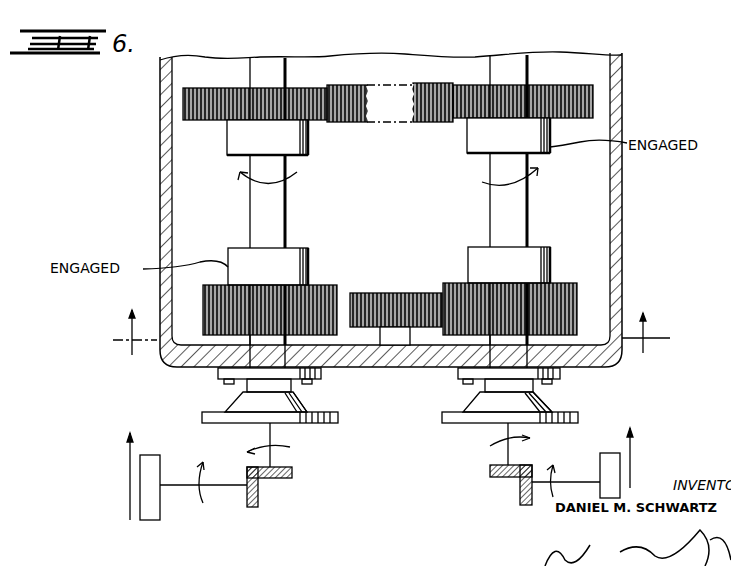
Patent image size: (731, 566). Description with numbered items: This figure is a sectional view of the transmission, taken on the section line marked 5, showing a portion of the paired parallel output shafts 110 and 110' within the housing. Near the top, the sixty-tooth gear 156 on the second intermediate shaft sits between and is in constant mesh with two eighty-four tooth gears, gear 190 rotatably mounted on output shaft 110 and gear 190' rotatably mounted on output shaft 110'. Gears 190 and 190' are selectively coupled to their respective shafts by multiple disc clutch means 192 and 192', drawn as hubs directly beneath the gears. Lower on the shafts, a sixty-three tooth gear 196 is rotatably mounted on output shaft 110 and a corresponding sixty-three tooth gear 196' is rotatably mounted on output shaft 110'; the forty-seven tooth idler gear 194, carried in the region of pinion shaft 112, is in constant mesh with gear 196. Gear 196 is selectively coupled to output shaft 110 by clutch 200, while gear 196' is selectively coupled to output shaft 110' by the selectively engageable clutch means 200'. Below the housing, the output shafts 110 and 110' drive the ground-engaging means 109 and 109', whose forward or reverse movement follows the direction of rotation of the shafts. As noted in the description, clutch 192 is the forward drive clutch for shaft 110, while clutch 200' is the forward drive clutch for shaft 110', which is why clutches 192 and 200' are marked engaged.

The 84 tooth gear 190' is at (255, 75).
The 84 tooth gear 190 is at (528, 74).
The gear 156 is at (433, 87).
The multiple disc clutch means 192' is at (293, 143).
The multiple disc clutch means 192 is at (500, 151).
The output shaft 110' is at (290, 213).
The output shaft 110 is at (530, 211).
The selectively engageable clutch means 200' is at (291, 253).
The clutch 200 is at (495, 251).
The gear 196' is at (289, 291).
The gear 196 is at (518, 291).
The idler gear 194 is at (393, 300).
The pinion shaft 112 is at (400, 333).
The ground-engaging means 109' is at (151, 494).
The ground-engaging means 109 is at (612, 454).
The section line 5- 5 is at (391, 335).